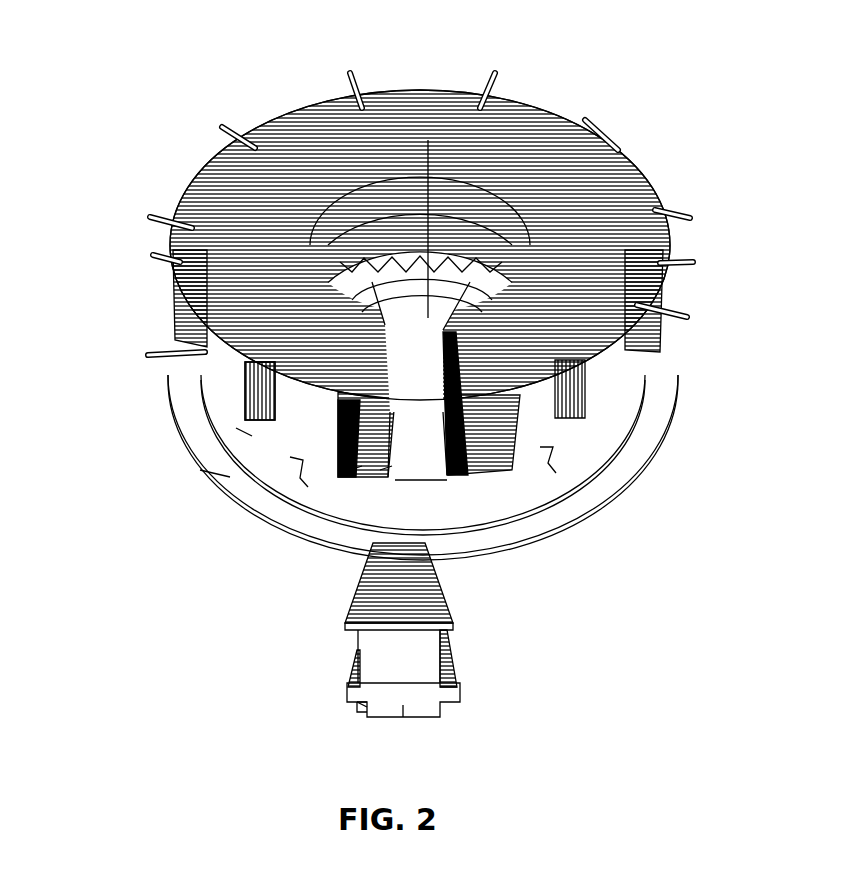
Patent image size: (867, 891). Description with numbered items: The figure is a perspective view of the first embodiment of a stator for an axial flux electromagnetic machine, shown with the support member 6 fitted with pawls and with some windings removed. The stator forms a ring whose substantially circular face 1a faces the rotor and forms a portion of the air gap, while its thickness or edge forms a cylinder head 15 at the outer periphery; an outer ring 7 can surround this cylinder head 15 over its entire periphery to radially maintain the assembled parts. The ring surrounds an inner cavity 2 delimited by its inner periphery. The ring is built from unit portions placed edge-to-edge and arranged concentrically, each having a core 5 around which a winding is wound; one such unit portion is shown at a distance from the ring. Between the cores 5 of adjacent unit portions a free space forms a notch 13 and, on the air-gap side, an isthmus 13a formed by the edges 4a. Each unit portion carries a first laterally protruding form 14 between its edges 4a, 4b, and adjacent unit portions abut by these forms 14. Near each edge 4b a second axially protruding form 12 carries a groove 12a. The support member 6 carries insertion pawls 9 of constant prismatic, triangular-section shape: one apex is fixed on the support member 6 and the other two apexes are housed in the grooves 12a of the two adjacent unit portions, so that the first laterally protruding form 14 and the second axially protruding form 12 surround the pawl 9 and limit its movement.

The circular face 1a is at (340, 147).
The inner cavity 2 is at (428, 140).
The edge 4a is at (443, 590).
The edge 4b is at (455, 702).
The core 5 is at (438, 649).
The support member 6 is at (230, 477).
The outer ring 7 is at (243, 432).
The insertion pawl 9 is at (447, 478).
The second axially protruding form 12 is at (360, 715).
The groove 12a is at (365, 707).
The notch 13 is at (258, 395).
The isthmus 13a is at (255, 378).
The first laterally protruding form 14 is at (450, 694).
The cylinder head 15 is at (403, 705).